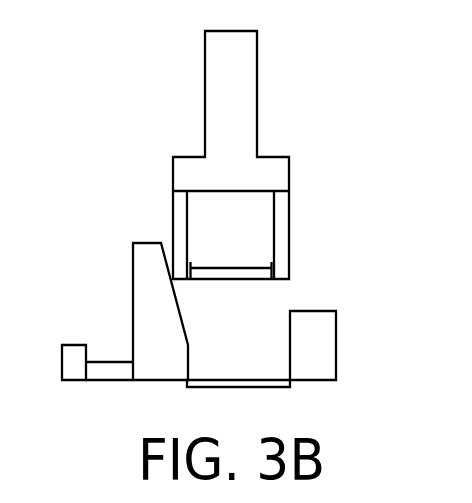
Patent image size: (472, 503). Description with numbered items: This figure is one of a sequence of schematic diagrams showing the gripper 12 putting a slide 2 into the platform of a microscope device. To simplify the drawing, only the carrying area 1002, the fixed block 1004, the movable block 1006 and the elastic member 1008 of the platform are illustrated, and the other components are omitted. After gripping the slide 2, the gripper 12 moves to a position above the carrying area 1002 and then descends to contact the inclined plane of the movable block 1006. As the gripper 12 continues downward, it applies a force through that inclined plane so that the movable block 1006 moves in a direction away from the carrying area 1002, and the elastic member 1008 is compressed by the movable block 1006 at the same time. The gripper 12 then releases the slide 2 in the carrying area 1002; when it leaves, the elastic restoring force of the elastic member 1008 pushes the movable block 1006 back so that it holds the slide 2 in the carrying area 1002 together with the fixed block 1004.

The gripper 12 is at (204, 157).
The slide 2 is at (243, 267).
The carrying area 1002 is at (262, 377).
The fixed block 1004 is at (337, 360).
The movable block 1006 is at (133, 259).
The elastic member 1008 is at (131, 361).